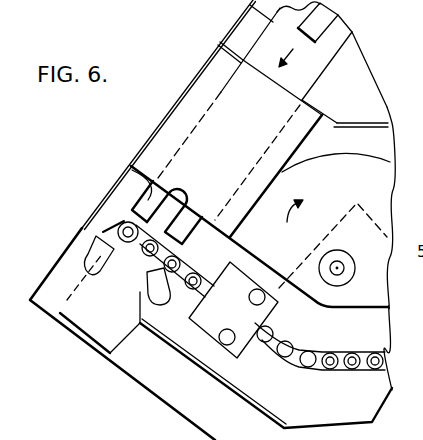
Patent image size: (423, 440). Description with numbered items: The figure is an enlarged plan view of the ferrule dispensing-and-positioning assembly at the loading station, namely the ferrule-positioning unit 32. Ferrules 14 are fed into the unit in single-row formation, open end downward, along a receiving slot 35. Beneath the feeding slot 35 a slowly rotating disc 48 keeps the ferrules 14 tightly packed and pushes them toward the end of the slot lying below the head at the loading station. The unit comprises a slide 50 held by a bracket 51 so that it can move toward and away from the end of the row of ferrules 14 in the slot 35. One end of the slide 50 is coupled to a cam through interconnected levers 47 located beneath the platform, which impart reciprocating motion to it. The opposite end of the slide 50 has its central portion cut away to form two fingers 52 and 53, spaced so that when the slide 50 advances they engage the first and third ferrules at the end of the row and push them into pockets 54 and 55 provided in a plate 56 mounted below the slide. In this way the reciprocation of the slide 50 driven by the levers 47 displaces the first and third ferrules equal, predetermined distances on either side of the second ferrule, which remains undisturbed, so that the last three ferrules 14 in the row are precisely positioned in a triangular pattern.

The ferrule-positioning unit 32 is at (190, 76).
The bracket 51 is at (178, 127).
The slide 50 is at (130, 167).
The levers 47 is at (327, 15).
The disc 48 is at (372, 173).
The finger 52 is at (123, 185).
The finger 53 is at (192, 230).
The pocket 54 is at (97, 237).
The plate 56 is at (77, 255).
The pocket 55 is at (157, 300).
The ferrules 14 is at (122, 242).
The slot 35 is at (369, 353).